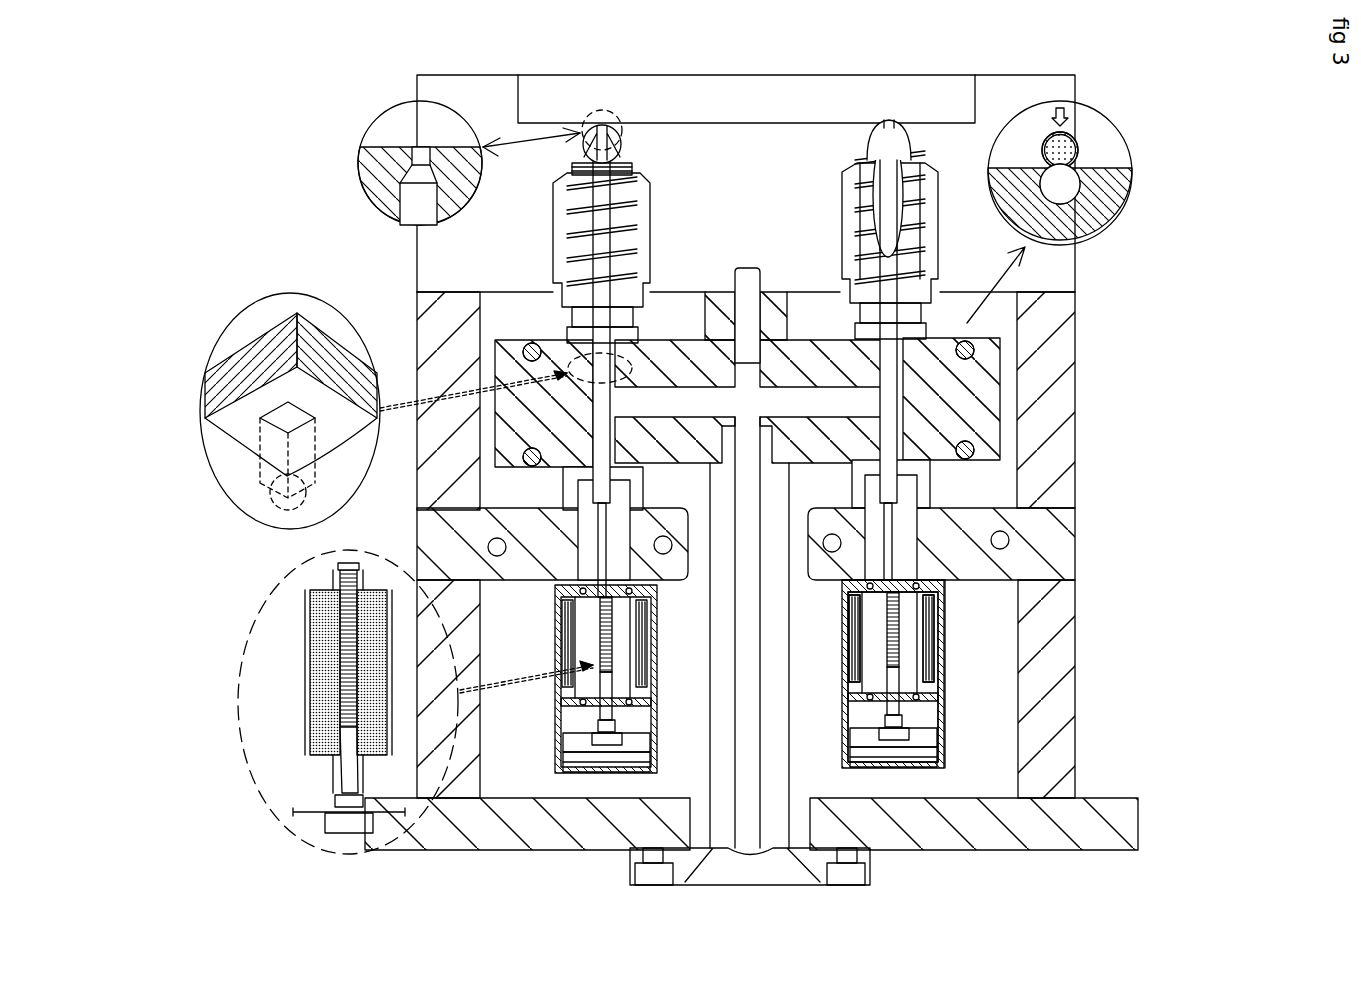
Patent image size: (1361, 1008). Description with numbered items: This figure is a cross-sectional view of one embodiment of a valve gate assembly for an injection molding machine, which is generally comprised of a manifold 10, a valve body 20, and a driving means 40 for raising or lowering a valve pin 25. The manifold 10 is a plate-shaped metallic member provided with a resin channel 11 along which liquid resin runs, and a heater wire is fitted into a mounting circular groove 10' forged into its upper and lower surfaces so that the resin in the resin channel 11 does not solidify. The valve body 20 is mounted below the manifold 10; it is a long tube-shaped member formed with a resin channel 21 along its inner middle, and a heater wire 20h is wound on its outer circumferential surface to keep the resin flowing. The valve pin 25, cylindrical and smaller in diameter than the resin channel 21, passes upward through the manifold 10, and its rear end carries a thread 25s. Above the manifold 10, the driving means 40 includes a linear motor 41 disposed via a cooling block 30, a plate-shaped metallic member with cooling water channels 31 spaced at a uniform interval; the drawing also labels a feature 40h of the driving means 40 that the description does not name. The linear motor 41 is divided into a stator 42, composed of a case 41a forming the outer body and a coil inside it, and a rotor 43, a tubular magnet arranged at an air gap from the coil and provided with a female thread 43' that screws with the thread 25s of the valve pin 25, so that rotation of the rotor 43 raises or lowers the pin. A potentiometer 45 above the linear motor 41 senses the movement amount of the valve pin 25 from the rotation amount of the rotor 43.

The manifold 10 is at (698, 311).
The mounting circular groove 10' is at (1107, 230).
The resin channel 11 is at (681, 403).
The valve body 20 is at (873, 150).
The heater wire 20h is at (853, 258).
The resin channel 21 is at (860, 195).
The valve pin 25 is at (888, 238).
The thread 25s is at (340, 690).
The cooling block 30 is at (1043, 567).
The cooling water channels 31 is at (1000, 543).
The driving means 40 is at (958, 628).
The hole 40h is at (973, 453).
The linear motor 41 is at (945, 638).
The case 41a is at (947, 667).
The stator 42 is at (933, 658).
The rotor 43 is at (257, 672).
The female thread 43' is at (255, 776).
The potentiometer 45 is at (333, 827).